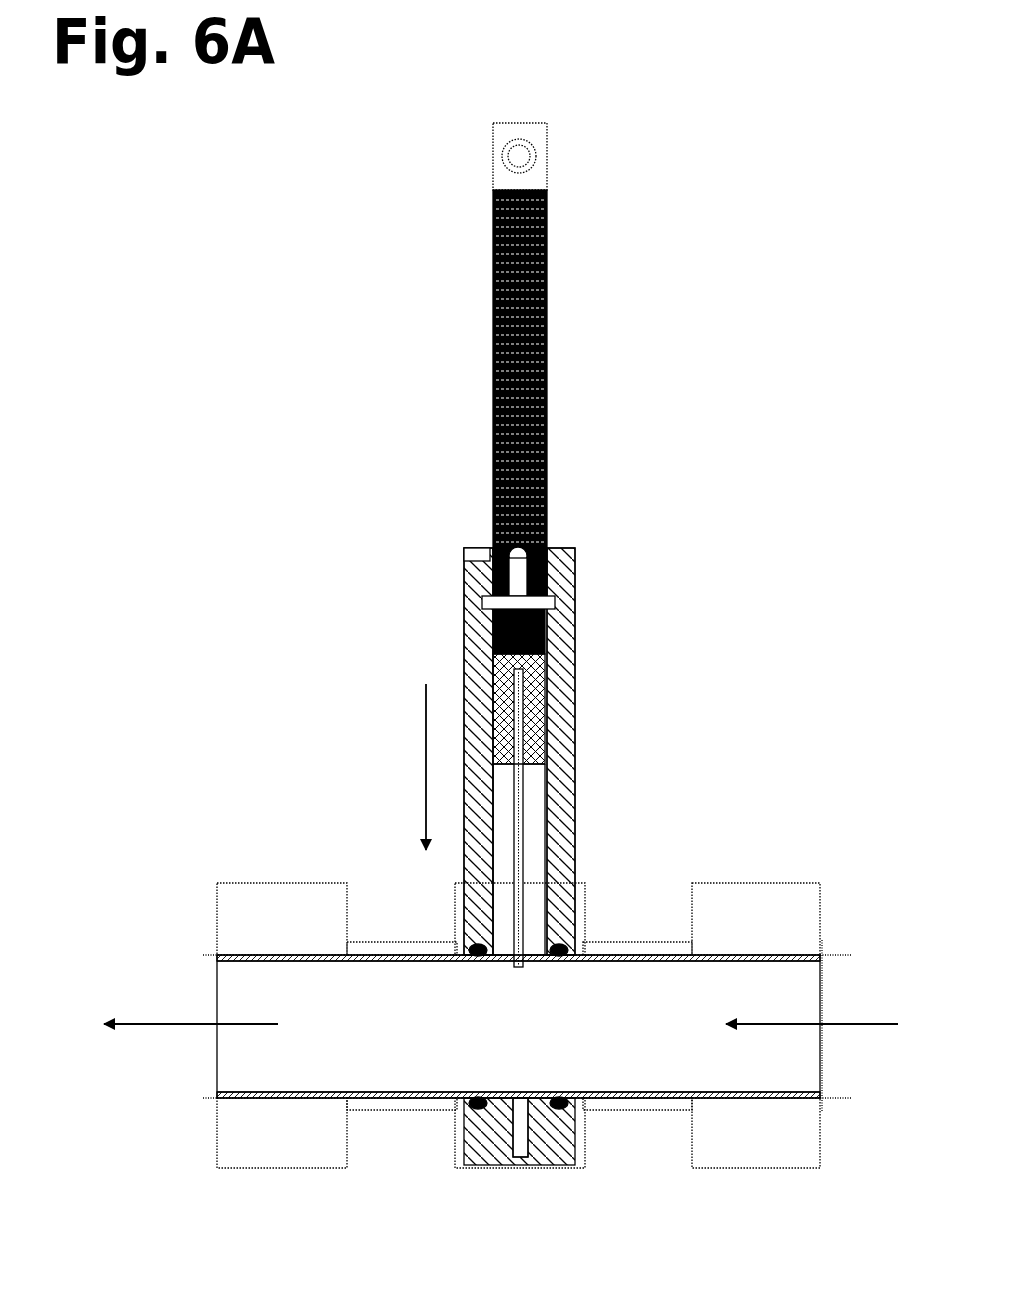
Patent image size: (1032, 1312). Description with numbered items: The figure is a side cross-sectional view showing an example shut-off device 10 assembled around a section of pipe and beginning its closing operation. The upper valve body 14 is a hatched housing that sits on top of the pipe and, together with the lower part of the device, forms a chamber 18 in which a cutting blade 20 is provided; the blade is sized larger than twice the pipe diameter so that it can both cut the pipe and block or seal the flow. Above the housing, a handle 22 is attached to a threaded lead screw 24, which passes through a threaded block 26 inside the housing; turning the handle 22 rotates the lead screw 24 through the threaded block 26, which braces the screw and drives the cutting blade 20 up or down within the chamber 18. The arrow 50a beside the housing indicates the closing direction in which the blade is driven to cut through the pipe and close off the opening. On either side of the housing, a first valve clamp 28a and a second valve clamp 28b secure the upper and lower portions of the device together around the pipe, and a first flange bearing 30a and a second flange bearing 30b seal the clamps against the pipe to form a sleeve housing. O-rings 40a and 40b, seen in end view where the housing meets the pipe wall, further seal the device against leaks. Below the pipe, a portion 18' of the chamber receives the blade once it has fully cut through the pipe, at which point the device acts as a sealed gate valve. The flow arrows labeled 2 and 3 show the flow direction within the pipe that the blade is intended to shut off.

The shut-off device 10 is at (328, 452).
The handle 22 is at (508, 140).
The threaded lead screw 24 is at (494, 276).
The upper valve body 14 is at (470, 562).
The threaded block 26 is at (550, 597).
The cutting blade 20 is at (521, 710).
The chamber 18 is at (571, 834).
The arrow 50a is at (426, 773).
The first valve clamp 28a is at (278, 883).
The second valve clamp 28b is at (741, 883).
The first flange bearing 30a is at (437, 941).
The second flange bearing 30b is at (675, 941).
The O-ring 40a is at (476, 944).
The O-ring 40b is at (565, 1106).
The portion of the chamber 18' is at (555, 1155).
The flow outlet 2 is at (177, 1023).
The flow inlet 3 is at (853, 1024).